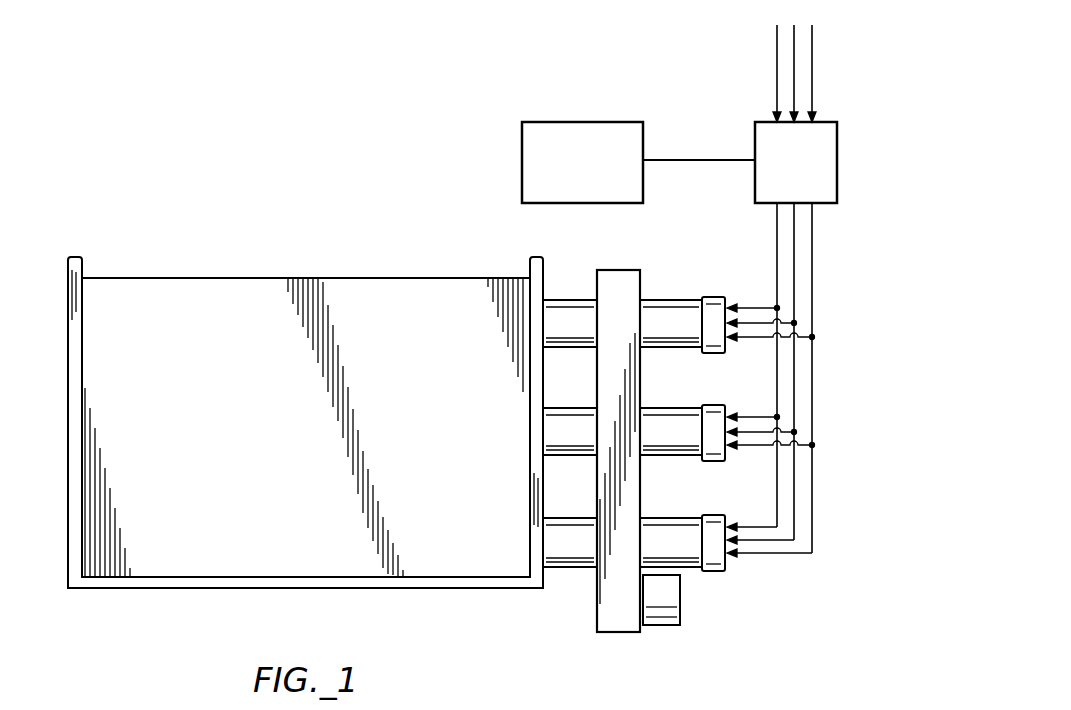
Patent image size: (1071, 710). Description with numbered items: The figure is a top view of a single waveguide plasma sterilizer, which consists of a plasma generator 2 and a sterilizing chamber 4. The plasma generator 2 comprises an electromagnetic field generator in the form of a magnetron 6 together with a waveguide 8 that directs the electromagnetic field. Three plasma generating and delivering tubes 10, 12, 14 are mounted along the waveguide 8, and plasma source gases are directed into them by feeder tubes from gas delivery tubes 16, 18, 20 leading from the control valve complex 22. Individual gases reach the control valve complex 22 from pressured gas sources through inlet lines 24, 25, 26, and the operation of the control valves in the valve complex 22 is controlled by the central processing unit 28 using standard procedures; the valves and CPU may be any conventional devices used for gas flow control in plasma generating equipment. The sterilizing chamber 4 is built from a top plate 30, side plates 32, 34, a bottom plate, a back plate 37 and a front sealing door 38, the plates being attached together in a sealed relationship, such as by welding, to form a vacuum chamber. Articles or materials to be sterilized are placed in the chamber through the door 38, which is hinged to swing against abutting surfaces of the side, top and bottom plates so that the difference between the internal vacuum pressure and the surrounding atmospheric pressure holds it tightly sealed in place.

The plasma generator 2 is at (669, 272).
The sterilizing chamber 4 is at (343, 252).
The magnetron 6 is at (680, 598).
The waveguide 8 is at (595, 612).
The plasma generating and delivering tube 10 is at (678, 300).
The plasma generating and delivering tube 12 is at (672, 408).
The plasma generating and delivering tube 14 is at (668, 518).
The gas delivery tube 16 is at (777, 226).
The gas delivery tube 18 is at (794, 250).
The gas delivery tube 20 is at (813, 222).
The control valve complex 22 is at (755, 133).
The inlet line 24 is at (776, 47).
The inlet line 25 is at (793, 70).
The inlet line 26 is at (815, 42).
The central processing unit 28 is at (522, 153).
The top plate 30 is at (287, 280).
The side plate 32 is at (68, 547).
The side plate 34 is at (545, 277).
The back plate 37 is at (207, 278).
The front sealing door 38 is at (273, 588).